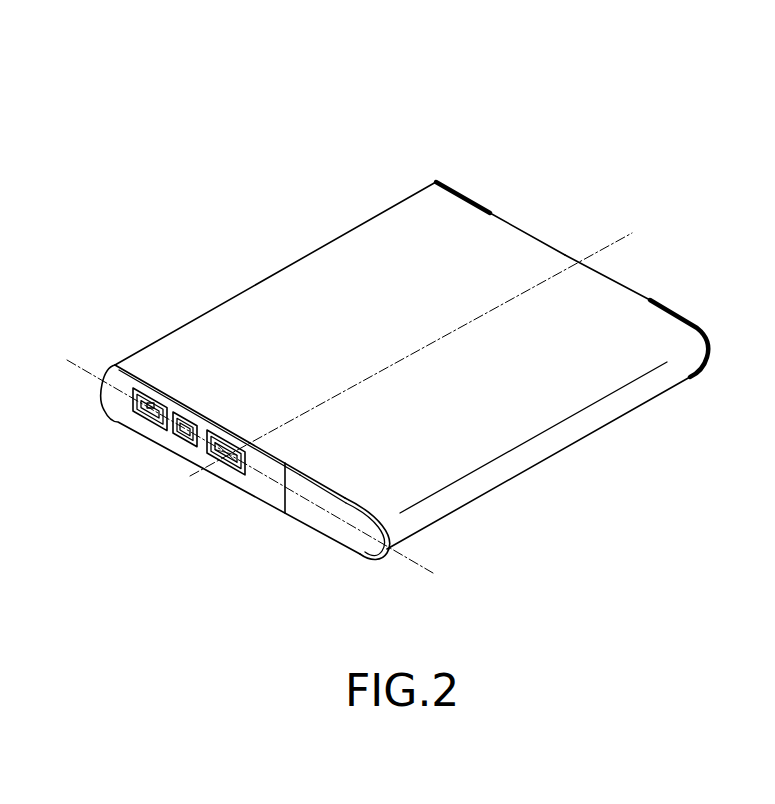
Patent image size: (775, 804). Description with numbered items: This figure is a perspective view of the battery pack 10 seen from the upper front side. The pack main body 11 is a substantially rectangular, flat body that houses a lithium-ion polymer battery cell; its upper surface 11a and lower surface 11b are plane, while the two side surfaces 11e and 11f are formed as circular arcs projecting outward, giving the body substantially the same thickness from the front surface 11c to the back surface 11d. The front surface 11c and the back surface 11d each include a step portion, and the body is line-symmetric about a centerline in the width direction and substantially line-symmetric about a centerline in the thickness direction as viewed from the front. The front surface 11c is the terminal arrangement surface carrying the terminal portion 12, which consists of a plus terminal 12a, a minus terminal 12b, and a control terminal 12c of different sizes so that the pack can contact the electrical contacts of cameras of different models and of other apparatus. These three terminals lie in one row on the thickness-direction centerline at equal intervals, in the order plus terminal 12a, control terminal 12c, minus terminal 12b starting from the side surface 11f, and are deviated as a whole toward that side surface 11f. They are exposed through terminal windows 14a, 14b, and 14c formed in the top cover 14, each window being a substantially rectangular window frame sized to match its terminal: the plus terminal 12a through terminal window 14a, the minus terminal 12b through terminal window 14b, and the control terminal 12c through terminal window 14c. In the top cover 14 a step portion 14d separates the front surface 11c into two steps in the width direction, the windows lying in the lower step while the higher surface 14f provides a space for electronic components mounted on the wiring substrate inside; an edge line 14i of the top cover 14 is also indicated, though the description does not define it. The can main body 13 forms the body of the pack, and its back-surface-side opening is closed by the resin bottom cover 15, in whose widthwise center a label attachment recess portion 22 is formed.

The battery pack 10 is at (491, 160).
The pack main body 11 is at (558, 402).
The upper surface 11a is at (333, 268).
The lower surface 11b is at (370, 563).
The front surface 11c is at (246, 494).
The back surface 11d is at (638, 294).
The side surface 11e is at (637, 408).
The side surface 11f is at (263, 279).
The terminal portion 12 is at (152, 455).
The plus terminal 12a is at (135, 386).
The minus terminal 12b is at (230, 432).
The control terminal 12c is at (183, 412).
The can main body 13 is at (515, 477).
The top cover 14 is at (352, 555).
The terminal window 14a is at (140, 437).
The terminal window 14b is at (207, 475).
The terminal window 14c is at (167, 448).
The step portion 14d is at (312, 533).
The higher surface 14f is at (355, 493).
The edge line of connector cover 14i is at (280, 450).
The bottom cover 15 is at (708, 315).
The label attachment recess portion 22 is at (533, 237).